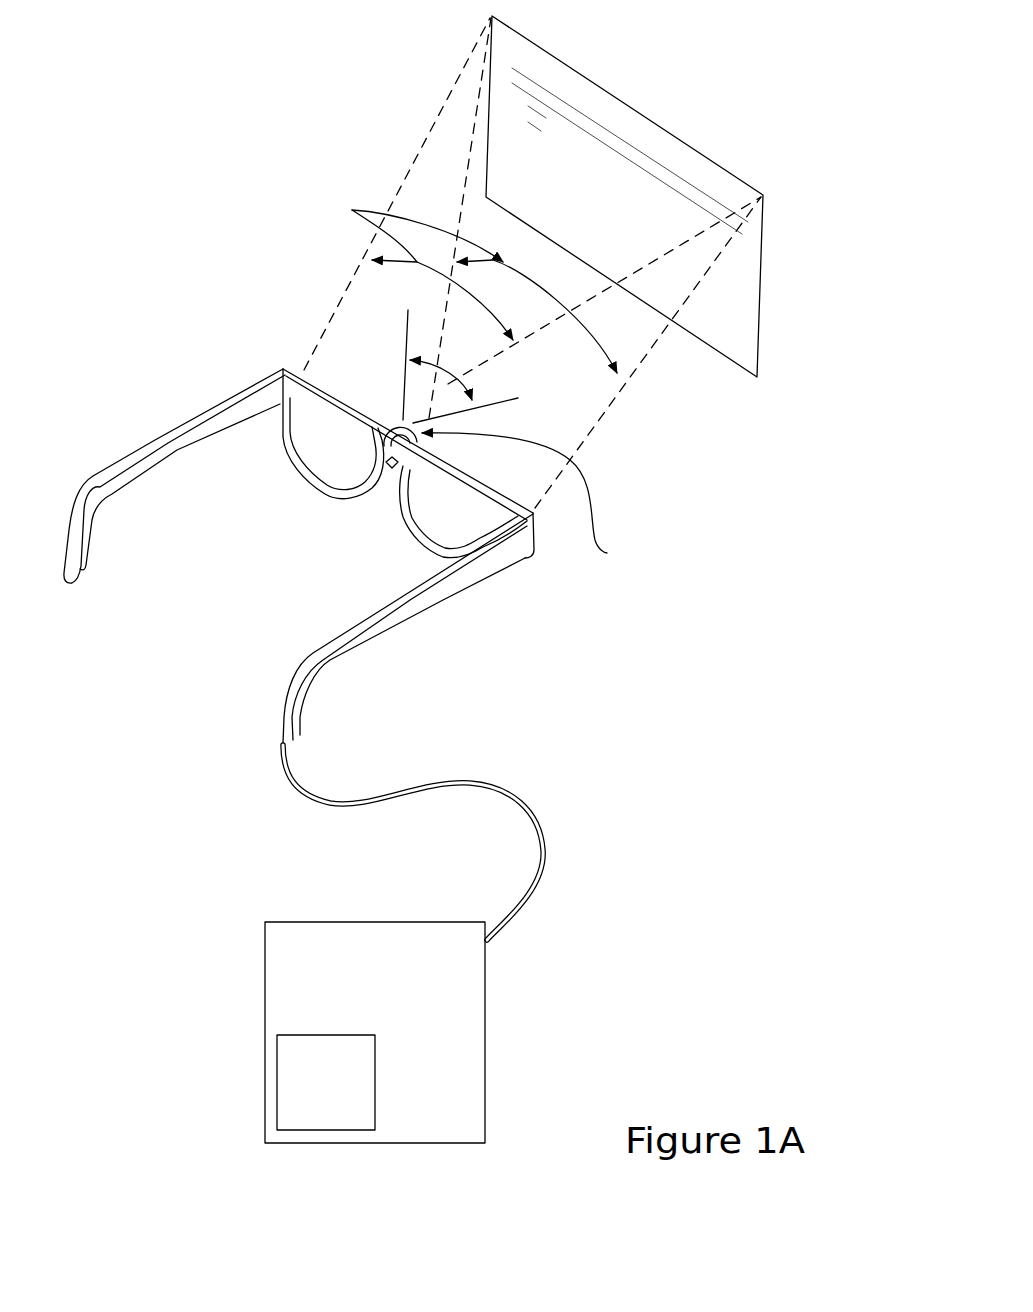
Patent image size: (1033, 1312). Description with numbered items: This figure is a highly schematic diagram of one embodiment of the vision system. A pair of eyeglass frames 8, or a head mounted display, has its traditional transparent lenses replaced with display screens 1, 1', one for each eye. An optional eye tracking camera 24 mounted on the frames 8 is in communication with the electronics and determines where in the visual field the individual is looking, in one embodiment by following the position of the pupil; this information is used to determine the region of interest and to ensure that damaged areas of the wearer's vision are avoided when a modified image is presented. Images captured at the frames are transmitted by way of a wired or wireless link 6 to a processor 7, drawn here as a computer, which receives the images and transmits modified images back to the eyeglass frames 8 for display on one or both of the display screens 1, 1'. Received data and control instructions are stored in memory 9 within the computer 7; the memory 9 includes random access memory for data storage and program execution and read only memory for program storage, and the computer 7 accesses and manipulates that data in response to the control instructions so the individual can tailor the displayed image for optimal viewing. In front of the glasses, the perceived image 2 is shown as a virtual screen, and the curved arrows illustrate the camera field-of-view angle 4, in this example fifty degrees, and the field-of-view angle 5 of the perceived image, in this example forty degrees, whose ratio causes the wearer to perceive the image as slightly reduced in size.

The display screen 1 is at (463, 512).
The display screen 1' is at (333, 434).
The perceived image 2 is at (624, 196).
The camera FOV angle 4 is at (470, 387).
The FOV angle of perceived image 5 is at (350, 210).
The wired or wireless link 6 is at (484, 781).
The processor 7 is at (375, 1032).
The eyeglass frames 8 is at (174, 476).
The memory 9 is at (326, 1082).
The eye tracking camera 24 is at (388, 471).